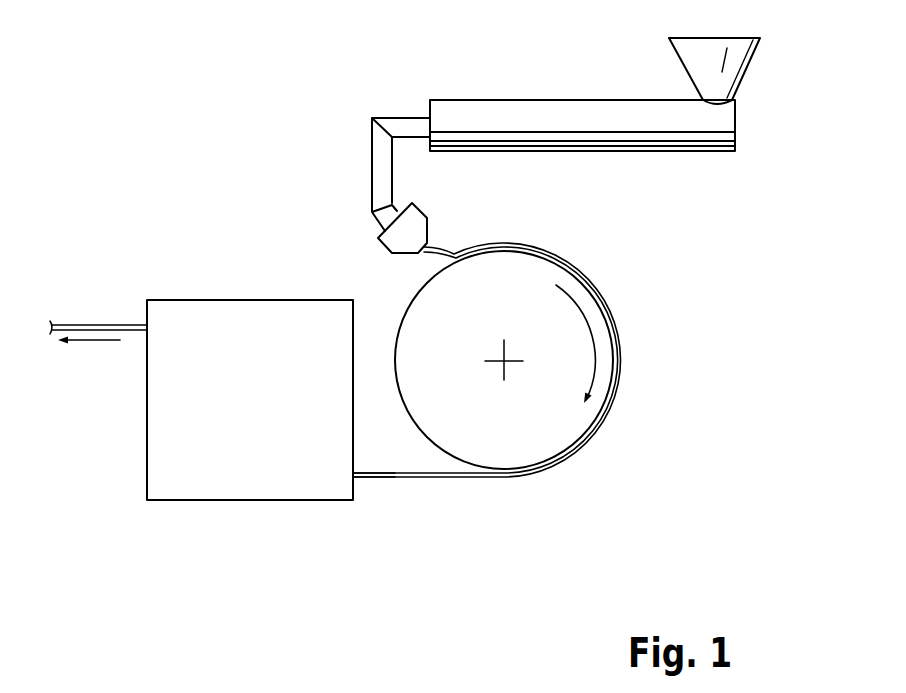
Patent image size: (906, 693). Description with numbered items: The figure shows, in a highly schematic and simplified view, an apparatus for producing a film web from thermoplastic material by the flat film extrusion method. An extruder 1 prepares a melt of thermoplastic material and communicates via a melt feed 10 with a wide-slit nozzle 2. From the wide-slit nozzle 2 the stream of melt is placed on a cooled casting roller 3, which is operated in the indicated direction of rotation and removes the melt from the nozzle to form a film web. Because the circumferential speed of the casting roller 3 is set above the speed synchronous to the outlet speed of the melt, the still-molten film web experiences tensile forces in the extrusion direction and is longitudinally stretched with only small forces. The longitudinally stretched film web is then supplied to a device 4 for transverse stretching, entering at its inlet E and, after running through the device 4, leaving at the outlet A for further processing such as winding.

The extruder 1 is at (556, 86).
The melt feed 10 is at (376, 165).
The wide-slit nozzle 2 is at (421, 228).
The casting roller 3 is at (537, 264).
The device for transverse stretching 4 is at (253, 492).
The outlet A is at (143, 322).
The inlet E is at (360, 484).